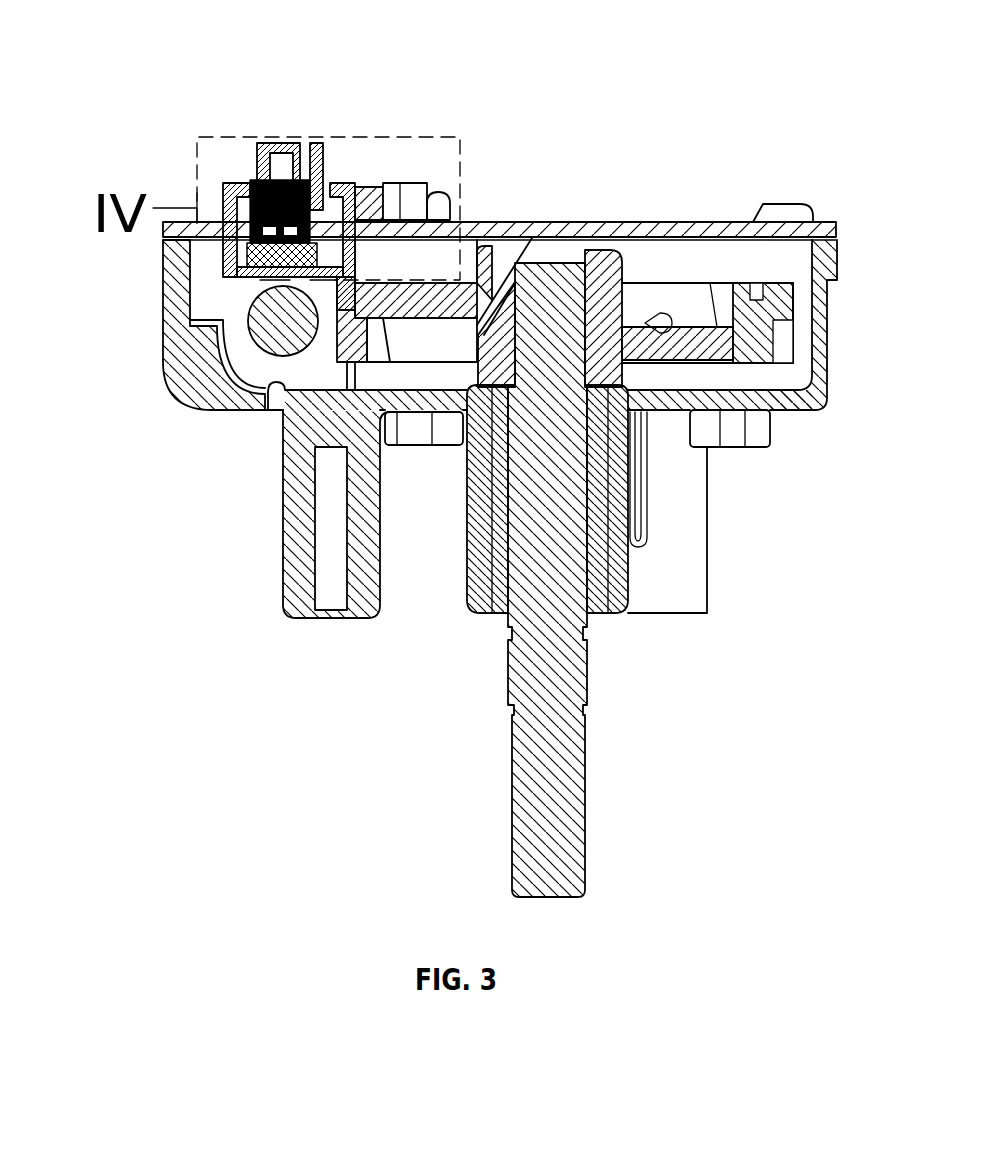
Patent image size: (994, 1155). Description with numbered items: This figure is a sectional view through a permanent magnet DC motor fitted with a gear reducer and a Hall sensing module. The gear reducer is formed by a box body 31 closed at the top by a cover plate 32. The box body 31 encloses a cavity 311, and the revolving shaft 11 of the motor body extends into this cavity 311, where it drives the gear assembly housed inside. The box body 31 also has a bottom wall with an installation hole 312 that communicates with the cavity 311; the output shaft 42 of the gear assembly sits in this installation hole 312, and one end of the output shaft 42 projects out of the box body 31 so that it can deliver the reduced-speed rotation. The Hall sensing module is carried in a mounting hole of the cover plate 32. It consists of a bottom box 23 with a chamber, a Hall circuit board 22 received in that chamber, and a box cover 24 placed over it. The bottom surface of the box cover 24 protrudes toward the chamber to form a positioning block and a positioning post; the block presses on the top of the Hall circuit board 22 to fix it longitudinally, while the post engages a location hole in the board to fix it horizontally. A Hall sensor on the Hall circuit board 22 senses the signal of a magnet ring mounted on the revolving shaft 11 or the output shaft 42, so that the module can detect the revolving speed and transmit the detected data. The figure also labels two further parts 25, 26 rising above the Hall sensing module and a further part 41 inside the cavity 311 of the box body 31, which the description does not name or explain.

The revolving shaft 11 is at (287, 335).
The Hall circuit board 22 is at (247, 260).
The bottom box 23 is at (372, 222).
The box cover 24 is at (378, 190).
The connector pin 25 is at (248, 186).
The connector pin 26 is at (307, 185).
The box body 31 is at (263, 400).
The cavity 311 is at (705, 370).
The installation hole 312 is at (598, 615).
The cover plate 32 is at (615, 223).
The rotor magnet carrier 41 is at (645, 345).
The output shaft 42 is at (530, 663).